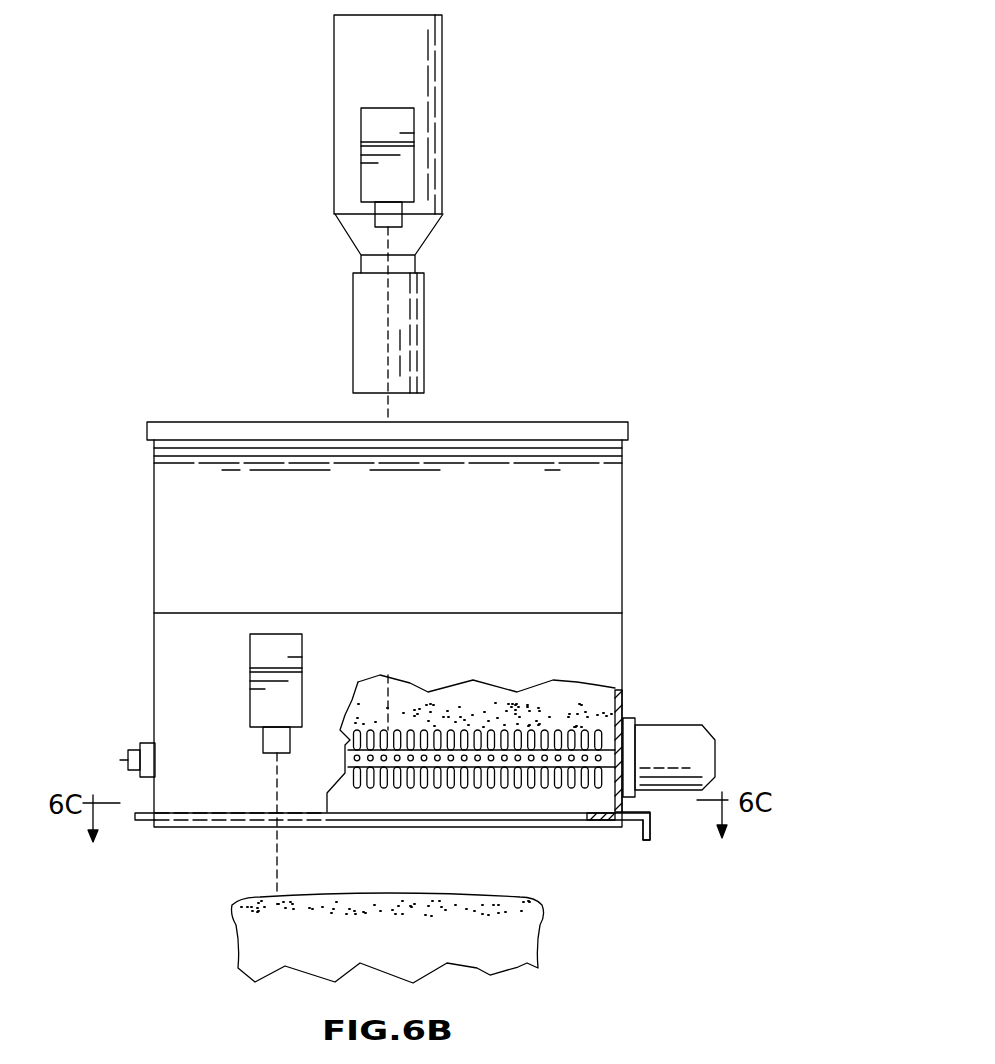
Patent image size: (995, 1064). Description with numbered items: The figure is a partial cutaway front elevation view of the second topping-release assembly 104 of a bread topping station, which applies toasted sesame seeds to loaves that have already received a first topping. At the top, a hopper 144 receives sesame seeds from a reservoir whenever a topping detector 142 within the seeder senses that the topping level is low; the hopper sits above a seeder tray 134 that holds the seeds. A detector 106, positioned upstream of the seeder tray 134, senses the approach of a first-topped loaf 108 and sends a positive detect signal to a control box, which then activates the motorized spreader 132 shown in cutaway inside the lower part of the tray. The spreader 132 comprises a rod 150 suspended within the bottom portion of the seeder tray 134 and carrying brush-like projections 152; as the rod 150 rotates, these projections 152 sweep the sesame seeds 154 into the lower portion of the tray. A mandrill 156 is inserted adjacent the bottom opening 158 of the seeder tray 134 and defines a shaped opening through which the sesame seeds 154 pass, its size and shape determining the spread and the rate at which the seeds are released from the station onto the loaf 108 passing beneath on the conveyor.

The topping-release assembly 104 is at (571, 183).
The detector 106 is at (250, 703).
The first-topped loaf 108 is at (545, 915).
The spreader 132 is at (668, 725).
The seeder tray 134 is at (622, 478).
The topping detector 142 is at (414, 152).
The hopper 144 is at (334, 77).
The rod 150 is at (128, 760).
The brush-like projections 152 is at (450, 788).
The sesame seeds 154 is at (488, 710).
The mandrill 156 is at (650, 830).
The bottom opening 158 is at (577, 828).